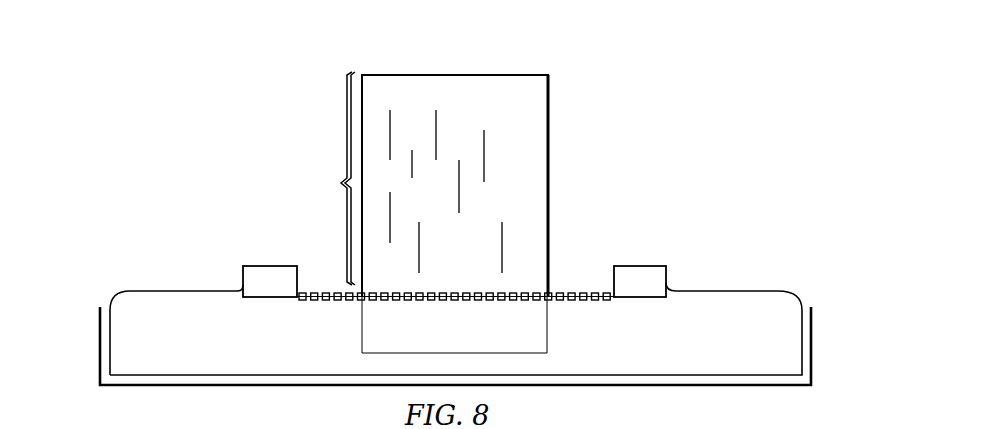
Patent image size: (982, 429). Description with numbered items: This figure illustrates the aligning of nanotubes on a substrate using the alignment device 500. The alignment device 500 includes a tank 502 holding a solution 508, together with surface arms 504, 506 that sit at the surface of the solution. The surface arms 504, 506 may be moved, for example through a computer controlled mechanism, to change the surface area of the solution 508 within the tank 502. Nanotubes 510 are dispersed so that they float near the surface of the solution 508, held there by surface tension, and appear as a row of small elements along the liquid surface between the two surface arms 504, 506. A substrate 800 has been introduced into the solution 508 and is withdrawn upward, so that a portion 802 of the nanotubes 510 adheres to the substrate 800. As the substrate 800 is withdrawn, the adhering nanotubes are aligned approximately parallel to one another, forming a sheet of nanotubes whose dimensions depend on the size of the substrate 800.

The alignment device 500 is at (811, 348).
The tank 502 is at (100, 342).
The surface arm 504 is at (268, 266).
The surface arm 506 is at (641, 266).
The solution 508 is at (660, 352).
The nanotubes 510 is at (326, 300).
The substrate 800 is at (549, 146).
The portion of nanotubes 802 is at (327, 178).